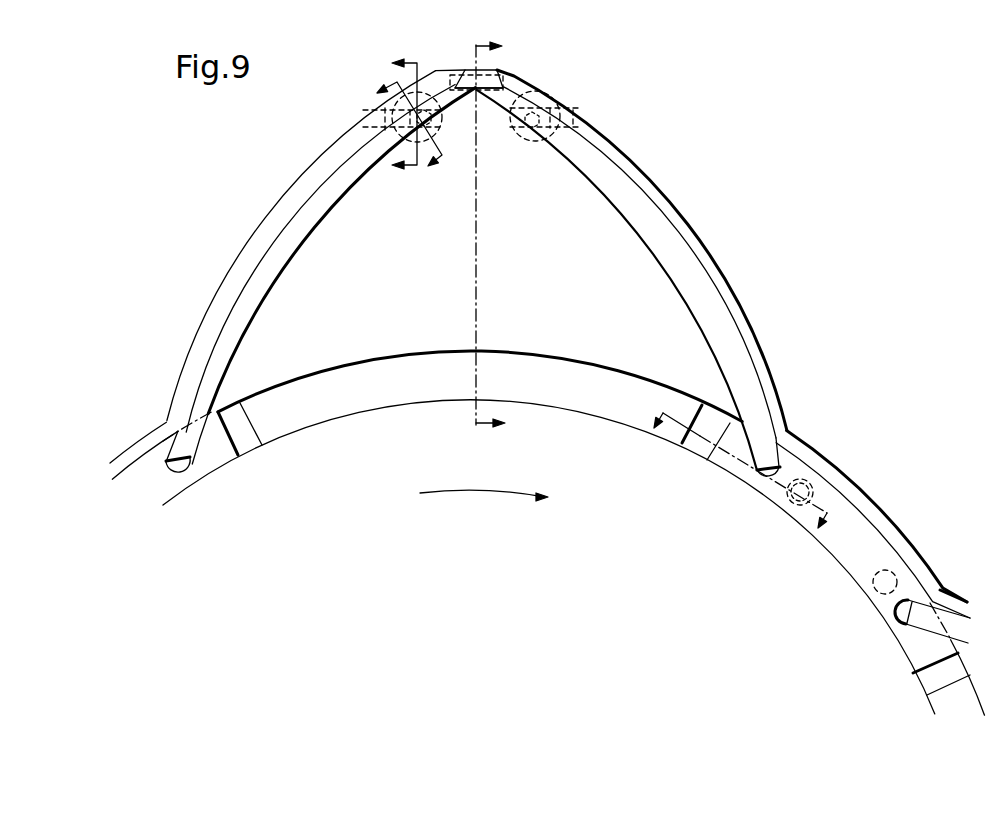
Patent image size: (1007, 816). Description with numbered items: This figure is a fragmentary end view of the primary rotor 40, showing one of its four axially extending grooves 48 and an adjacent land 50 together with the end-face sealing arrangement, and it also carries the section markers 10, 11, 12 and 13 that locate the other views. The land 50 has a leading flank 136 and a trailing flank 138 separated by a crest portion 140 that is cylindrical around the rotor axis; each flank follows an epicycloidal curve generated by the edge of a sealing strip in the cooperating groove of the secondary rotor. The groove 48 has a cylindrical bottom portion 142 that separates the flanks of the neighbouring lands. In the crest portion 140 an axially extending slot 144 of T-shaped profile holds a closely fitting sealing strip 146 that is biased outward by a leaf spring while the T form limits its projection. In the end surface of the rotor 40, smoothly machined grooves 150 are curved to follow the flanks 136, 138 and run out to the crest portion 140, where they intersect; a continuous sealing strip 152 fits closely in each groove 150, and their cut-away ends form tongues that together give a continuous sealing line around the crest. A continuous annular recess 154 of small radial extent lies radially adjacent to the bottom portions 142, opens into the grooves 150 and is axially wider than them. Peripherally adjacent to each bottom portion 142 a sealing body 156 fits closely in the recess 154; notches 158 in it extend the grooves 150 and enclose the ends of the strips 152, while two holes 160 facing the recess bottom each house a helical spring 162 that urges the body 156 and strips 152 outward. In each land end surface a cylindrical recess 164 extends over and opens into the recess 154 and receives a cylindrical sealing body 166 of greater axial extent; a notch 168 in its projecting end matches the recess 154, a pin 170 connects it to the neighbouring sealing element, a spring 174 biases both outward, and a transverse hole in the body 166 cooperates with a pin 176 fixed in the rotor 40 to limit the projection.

The section line 10- 10 is at (391, 123).
The section line 11- 11 is at (395, 136).
The section line 12- 12 is at (744, 485).
The section line 13- 13 is at (507, 236).
The primary rotor 40 is at (417, 460).
The groove 48 is at (152, 271).
The land 50 is at (327, 223).
The leading flank 136 is at (692, 232).
The trailing flank 138 is at (240, 257).
The crest portion 140 is at (503, 77).
The bottom portion 142 is at (873, 528).
The slot 144 is at (500, 88).
The sealing strip 146 is at (478, 70).
The groove 150 is at (223, 317).
The sealing strip 152 is at (210, 363).
The recess 154 is at (417, 367).
The sealing body 156 is at (223, 450).
The notch 158 is at (172, 481).
The hole 160 is at (788, 502).
The helical spring 162 is at (801, 507).
The cylindrical recess 164 is at (548, 110).
The cylindrical sealing body 166 is at (535, 137).
The notch 168 is at (440, 118).
The pin 170 is at (435, 140).
The spring 174 is at (432, 128).
The pin 176 is at (392, 111).